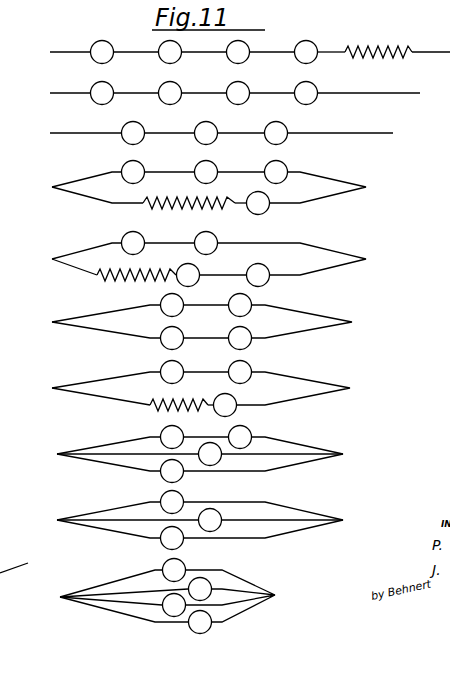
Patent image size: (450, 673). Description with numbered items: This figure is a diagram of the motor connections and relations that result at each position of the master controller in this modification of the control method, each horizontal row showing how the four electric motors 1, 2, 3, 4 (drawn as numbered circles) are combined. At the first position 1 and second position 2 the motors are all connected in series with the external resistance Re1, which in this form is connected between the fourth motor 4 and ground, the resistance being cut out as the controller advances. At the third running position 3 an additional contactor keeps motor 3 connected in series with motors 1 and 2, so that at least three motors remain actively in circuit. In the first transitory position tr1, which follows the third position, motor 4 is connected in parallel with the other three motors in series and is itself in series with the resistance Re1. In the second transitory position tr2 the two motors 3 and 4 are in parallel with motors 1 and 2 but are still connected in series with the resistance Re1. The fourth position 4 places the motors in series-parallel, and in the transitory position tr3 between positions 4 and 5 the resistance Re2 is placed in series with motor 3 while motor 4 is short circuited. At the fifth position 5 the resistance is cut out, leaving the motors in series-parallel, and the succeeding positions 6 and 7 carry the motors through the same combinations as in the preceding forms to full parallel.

The electric motor 1 is at (238, 44).
The electric motor 2 is at (223, 94).
The electric motor 3 is at (211, 134).
The electric motor 4 is at (189, 322).
The fifth controller position 5 is at (186, 454).
The sixth controller position 6 is at (186, 520).
The seventh controller position 7 is at (155, 596).
The first transitory position tr1 is at (199, 206).
The second transitory position tr2 is at (146, 282).
The transitory position between fourth and fifth positions tr3 is at (182, 389).
The external resistance Re1 is at (378, 40).
The resistance Re2 is at (179, 394).